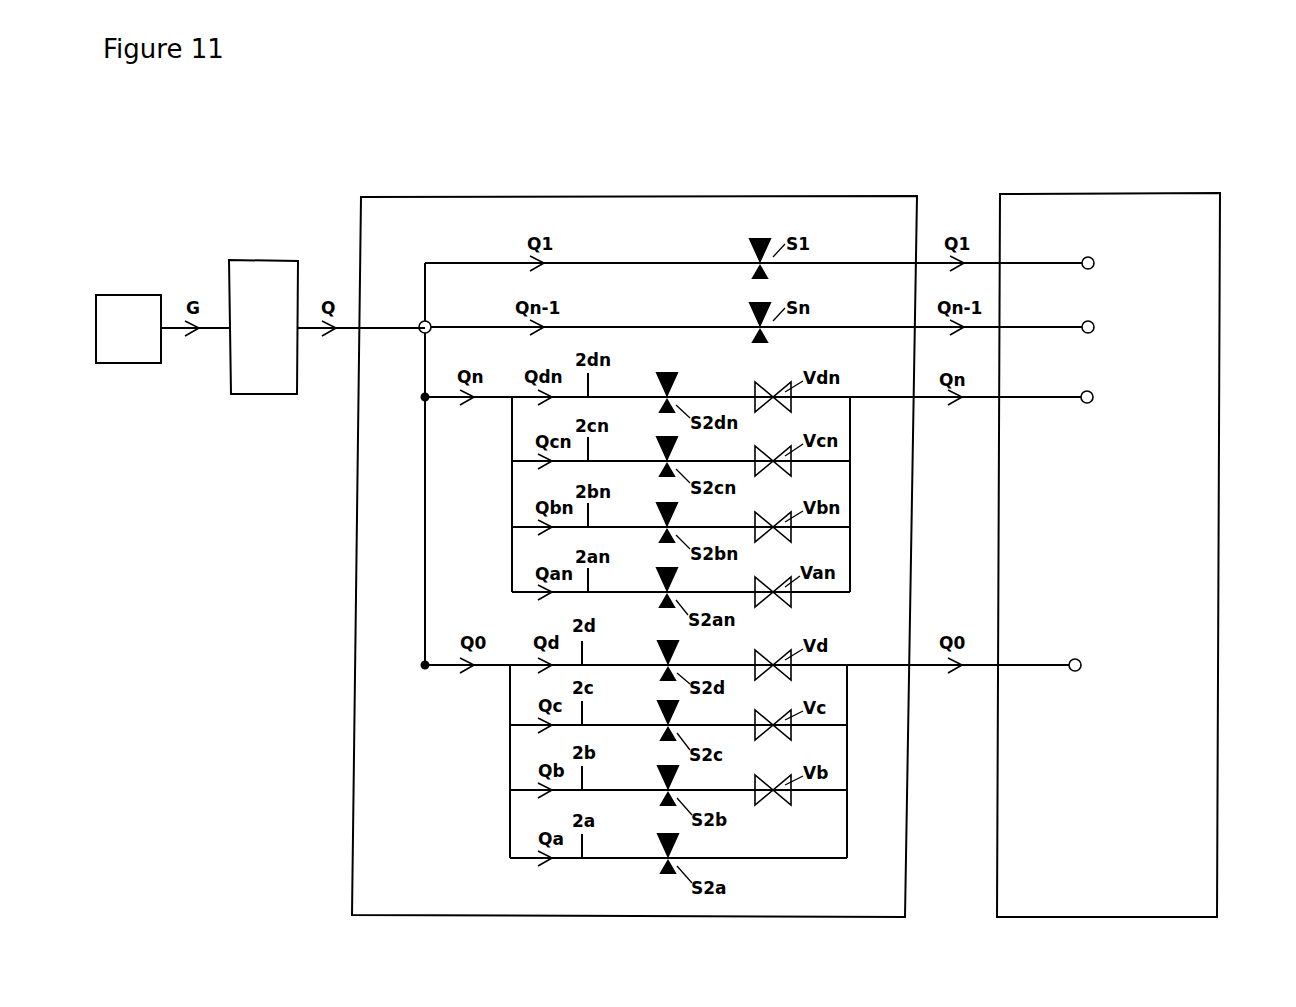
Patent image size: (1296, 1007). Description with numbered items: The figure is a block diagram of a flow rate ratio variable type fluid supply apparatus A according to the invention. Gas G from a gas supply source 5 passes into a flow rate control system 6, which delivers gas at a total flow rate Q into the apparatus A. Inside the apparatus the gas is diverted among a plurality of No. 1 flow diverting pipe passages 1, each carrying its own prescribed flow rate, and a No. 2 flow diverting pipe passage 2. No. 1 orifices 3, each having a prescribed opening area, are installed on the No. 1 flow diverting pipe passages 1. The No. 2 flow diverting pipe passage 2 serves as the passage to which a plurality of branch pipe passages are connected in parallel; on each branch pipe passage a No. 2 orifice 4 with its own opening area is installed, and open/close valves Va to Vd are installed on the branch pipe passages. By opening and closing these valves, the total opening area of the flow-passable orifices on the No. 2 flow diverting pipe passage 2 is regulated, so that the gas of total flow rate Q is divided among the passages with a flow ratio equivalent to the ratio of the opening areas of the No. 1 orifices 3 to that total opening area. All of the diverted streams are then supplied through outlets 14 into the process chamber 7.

The No. 1 flow diverting pipe passages 1 is at (474, 266).
The No. 2 flow diverting pipe passage 2 is at (497, 664).
The No. 1 orifices 3 is at (752, 275).
The No. 2 orifices 4 is at (655, 413).
The gas supply source 5 is at (133, 296).
The flow rate control system 6 is at (263, 260).
The process chamber 7 is at (1222, 310).
The outlets 14 is at (1079, 660).
The flow rate ratio variable type fluid supply apparatus A is at (750, 197).